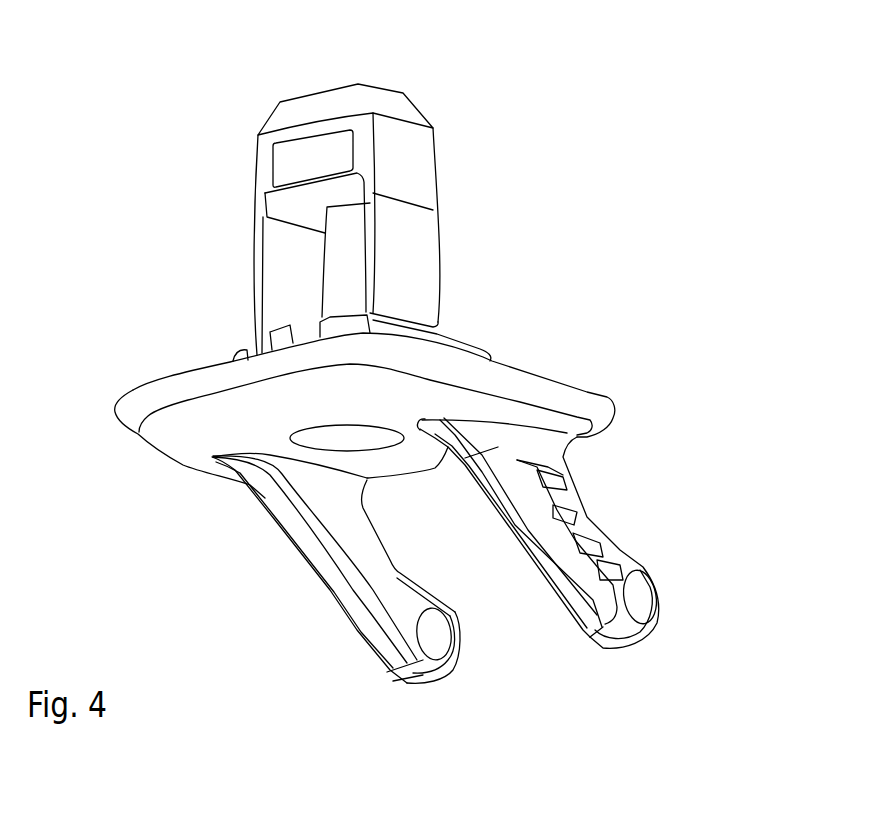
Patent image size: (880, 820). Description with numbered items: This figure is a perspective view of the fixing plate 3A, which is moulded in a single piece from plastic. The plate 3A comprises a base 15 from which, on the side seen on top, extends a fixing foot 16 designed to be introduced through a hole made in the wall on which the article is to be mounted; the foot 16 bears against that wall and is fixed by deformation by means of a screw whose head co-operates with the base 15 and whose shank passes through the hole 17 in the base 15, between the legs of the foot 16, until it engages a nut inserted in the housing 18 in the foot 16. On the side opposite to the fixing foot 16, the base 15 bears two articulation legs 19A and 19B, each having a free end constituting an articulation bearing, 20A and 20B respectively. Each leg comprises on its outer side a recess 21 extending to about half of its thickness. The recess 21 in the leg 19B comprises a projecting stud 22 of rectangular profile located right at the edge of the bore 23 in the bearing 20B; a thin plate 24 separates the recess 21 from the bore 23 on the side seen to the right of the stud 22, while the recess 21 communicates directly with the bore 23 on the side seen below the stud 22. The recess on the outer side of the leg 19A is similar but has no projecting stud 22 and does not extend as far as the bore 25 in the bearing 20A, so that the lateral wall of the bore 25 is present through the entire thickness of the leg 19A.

The plate 3A is at (535, 200).
The base 15 is at (166, 390).
The fixing foot 16 is at (199, 153).
The hole 17 is at (300, 447).
The housing 18 is at (313, 157).
The articulation leg 19A is at (330, 500).
The articulation leg 19B is at (512, 482).
The articulation bearing 20A is at (403, 685).
The articulation bearing 20B is at (630, 640).
The recess 21 is at (590, 527).
The projecting stud 22 is at (637, 547).
The bore 23 is at (635, 598).
The thin plate 24 is at (660, 583).
The bore 25 is at (437, 638).